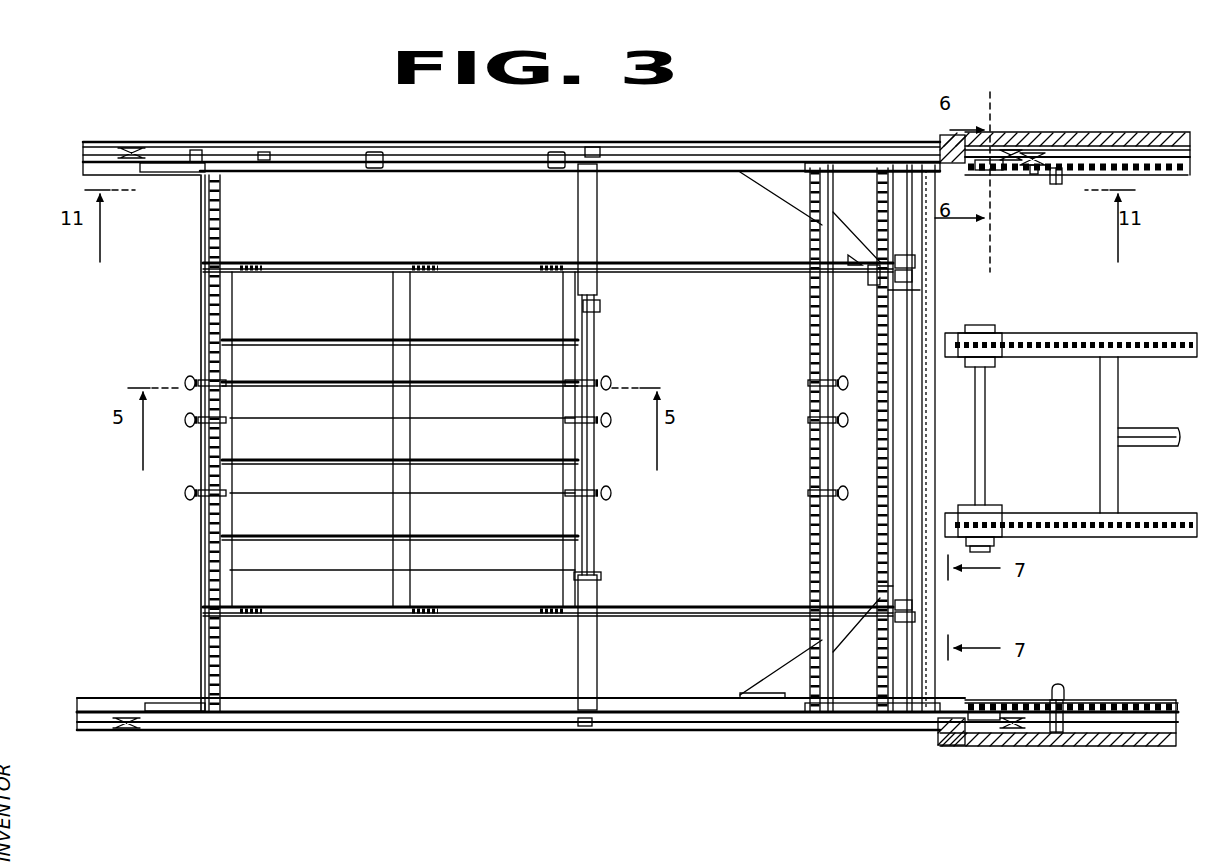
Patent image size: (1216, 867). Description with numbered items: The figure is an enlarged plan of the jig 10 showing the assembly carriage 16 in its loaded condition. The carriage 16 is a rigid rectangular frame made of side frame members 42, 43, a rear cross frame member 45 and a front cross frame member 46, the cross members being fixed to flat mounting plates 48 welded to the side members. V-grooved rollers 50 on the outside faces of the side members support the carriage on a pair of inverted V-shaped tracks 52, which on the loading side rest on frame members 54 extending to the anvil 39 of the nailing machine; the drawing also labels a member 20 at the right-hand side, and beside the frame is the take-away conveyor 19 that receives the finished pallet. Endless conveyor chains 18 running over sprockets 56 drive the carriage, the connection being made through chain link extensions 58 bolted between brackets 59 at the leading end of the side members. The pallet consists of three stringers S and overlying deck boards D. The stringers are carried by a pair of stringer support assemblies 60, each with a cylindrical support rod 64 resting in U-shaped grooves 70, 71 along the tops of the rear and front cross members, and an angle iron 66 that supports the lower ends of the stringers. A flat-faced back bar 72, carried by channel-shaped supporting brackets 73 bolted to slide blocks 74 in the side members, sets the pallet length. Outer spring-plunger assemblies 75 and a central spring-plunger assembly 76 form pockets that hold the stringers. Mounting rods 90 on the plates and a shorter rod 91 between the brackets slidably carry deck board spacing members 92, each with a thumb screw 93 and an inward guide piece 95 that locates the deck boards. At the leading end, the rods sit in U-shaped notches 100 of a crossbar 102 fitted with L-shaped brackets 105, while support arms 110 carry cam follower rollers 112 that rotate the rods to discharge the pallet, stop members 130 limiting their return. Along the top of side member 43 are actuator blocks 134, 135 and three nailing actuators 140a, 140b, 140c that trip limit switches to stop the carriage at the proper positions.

The jig 10 is at (120, 78).
The assembly carriage 16 is at (441, 158).
The endless conveyor chains 18 is at (1143, 172).
The take-away conveyor 19 is at (1112, 333).
The side rail 20 is at (1090, 132).
The anvil 39 is at (918, 325).
The side frame member 42 is at (400, 700).
The side frame member 43 is at (472, 163).
The rear cross frame member 45 is at (205, 545).
The front cross frame member 46 is at (812, 348).
The mounting plates 48 is at (845, 163).
The rollers 50 is at (135, 148).
The tracks 52 is at (82, 145).
The frame members 54 is at (82, 170).
The sprockets 56 is at (1003, 175).
The chain link extensions 58 is at (1056, 186).
The brackets 59 is at (1063, 690).
The stringer support assemblies 60 is at (665, 262).
The support rod 64 is at (375, 262).
The angle iron 66 is at (612, 273).
The U-shaped grooves 70 is at (221, 222).
The U-shaped grooves 71 is at (812, 246).
The back bar 72 is at (590, 318).
The channel-shaped supporting bracket 73 is at (598, 195).
The slide block 74 is at (598, 150).
The spring-plunger assemblies 75 is at (256, 273).
The spring-plunger assembly 76 is at (400, 277).
The mounting rods 90 is at (205, 572).
The mounting rod 91 is at (596, 545).
The deck board spacing members 92 is at (202, 379).
The thumb screw adjustment means 93 is at (185, 382).
The guide piece 95 is at (230, 418).
The U-shaped notches 100 is at (876, 222).
The crossbar 102 is at (878, 528).
The L-shaped brackets 105 is at (905, 292).
The support arms 110 is at (905, 253).
The cam follower roller 112 is at (905, 272).
The stop members 130 is at (868, 272).
The actuator block 134 is at (1033, 153).
The actuator block 135 is at (264, 152).
The nailing actuator 140a is at (560, 152).
The nailing actuator 140b is at (375, 152).
The nailing actuator 140c is at (197, 150).
The deck boards D is at (540, 300).
The stringers S is at (228, 325).